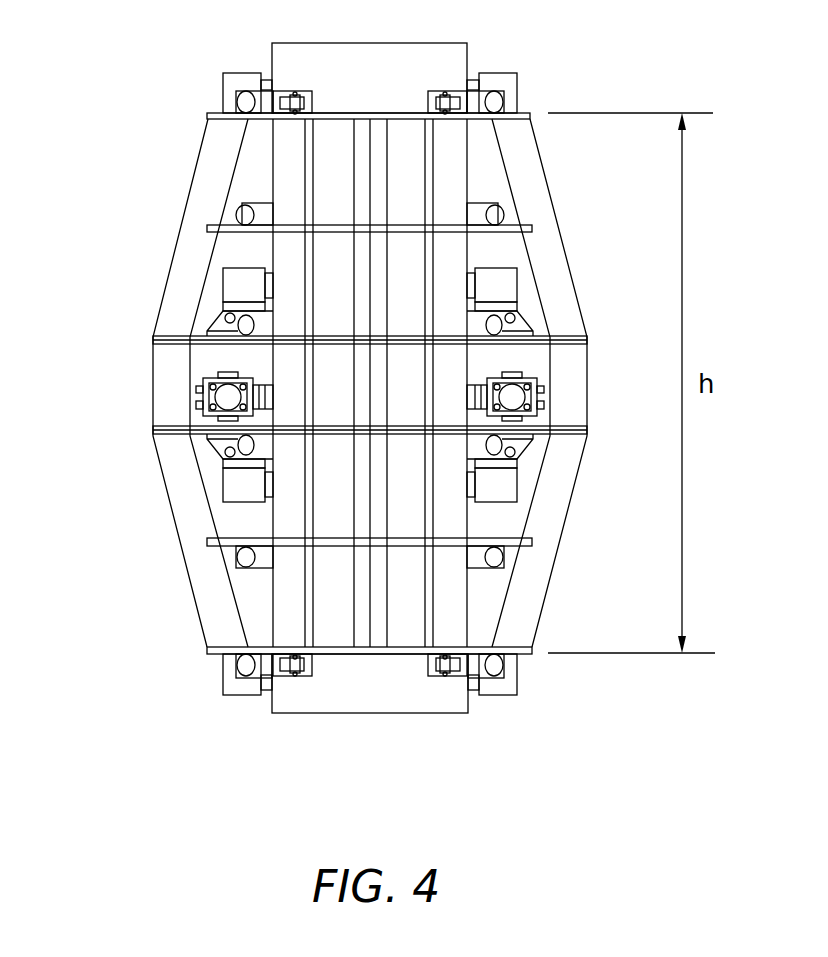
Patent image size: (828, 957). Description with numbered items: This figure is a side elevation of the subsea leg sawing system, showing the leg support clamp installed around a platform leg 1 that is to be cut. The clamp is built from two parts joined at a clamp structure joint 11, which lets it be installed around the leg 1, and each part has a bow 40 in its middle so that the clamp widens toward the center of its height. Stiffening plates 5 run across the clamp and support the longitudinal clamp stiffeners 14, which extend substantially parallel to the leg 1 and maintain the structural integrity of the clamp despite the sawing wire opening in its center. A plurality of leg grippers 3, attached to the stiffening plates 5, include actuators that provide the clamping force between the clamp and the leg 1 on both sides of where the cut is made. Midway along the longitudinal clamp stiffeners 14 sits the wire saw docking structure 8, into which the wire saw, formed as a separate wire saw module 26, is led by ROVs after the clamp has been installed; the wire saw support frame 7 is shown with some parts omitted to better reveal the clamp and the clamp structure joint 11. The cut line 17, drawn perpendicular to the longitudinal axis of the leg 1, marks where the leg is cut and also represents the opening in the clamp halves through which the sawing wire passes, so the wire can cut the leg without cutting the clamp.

The leg 1 is at (382, 50).
The leg grippers 3 is at (495, 100).
The stiffening plates 5 is at (532, 227).
The wire saw support frame 7 is at (200, 395).
The wire saw docking structure 8 is at (533, 420).
The clamp structure joint 11 is at (368, 178).
The longitudinal clamp stiffeners 14 is at (560, 273).
The cut line 17 is at (325, 375).
The wire saw module 26 is at (200, 405).
The bow 40 is at (100, 375).